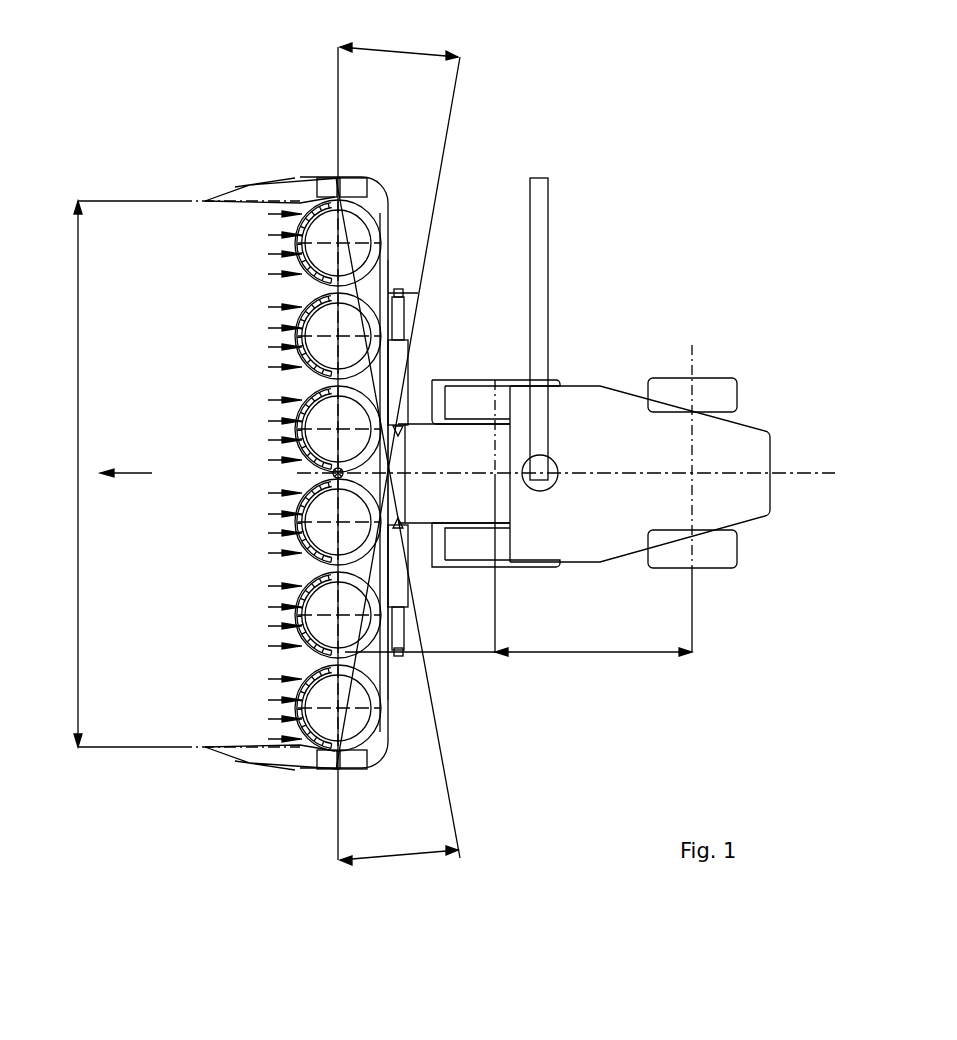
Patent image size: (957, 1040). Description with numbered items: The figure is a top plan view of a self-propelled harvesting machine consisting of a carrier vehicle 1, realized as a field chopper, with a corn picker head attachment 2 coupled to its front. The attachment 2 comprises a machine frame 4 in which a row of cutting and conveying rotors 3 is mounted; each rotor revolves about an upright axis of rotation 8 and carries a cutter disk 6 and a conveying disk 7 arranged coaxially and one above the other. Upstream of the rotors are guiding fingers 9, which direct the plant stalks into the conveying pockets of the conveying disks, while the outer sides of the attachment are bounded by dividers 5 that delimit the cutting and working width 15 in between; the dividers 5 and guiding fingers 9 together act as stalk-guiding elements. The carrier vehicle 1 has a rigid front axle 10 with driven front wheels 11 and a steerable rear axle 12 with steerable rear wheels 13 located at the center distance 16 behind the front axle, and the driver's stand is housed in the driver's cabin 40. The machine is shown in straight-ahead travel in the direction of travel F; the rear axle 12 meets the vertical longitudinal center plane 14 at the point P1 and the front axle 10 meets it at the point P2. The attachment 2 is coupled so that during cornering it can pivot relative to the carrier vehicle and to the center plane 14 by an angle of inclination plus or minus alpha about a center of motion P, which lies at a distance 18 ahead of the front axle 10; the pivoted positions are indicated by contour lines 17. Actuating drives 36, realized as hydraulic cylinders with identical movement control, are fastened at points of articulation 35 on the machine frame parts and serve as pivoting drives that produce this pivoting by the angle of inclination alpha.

The carrier vehicle 1 is at (590, 295).
The attachment 2 is at (357, 165).
The cutting and conveying rotors 3 is at (280, 475).
The machine frame 4 is at (382, 218).
The dividers 5 is at (283, 188).
The cutter disk 6 is at (280, 475).
The conveying disk 7 is at (320, 337).
The axis of rotation 8 is at (323, 258).
The guiding fingers 9 is at (308, 603).
The front axle 10 is at (500, 582).
The front wheels 11 is at (470, 378).
The rear axle 12 is at (697, 583).
The rear wheels 13 is at (722, 385).
The vertical longitudinal center plane 14 is at (832, 468).
The cutting and working width 15 is at (78, 463).
The center distance 16 is at (600, 655).
The contour lines 17 is at (410, 172).
The distance 18 is at (426, 648).
The point of articulation 35 is at (405, 293).
The actuating drive 36 is at (400, 358).
The driver's cabin 40 is at (478, 503).
The center of motion P is at (343, 476).
The intersection point of rear axle P1 is at (690, 473).
The intersection point of front axle P2 is at (492, 472).
The direction of travel F is at (126, 461).
The angle of inclination alpha is at (399, 467).